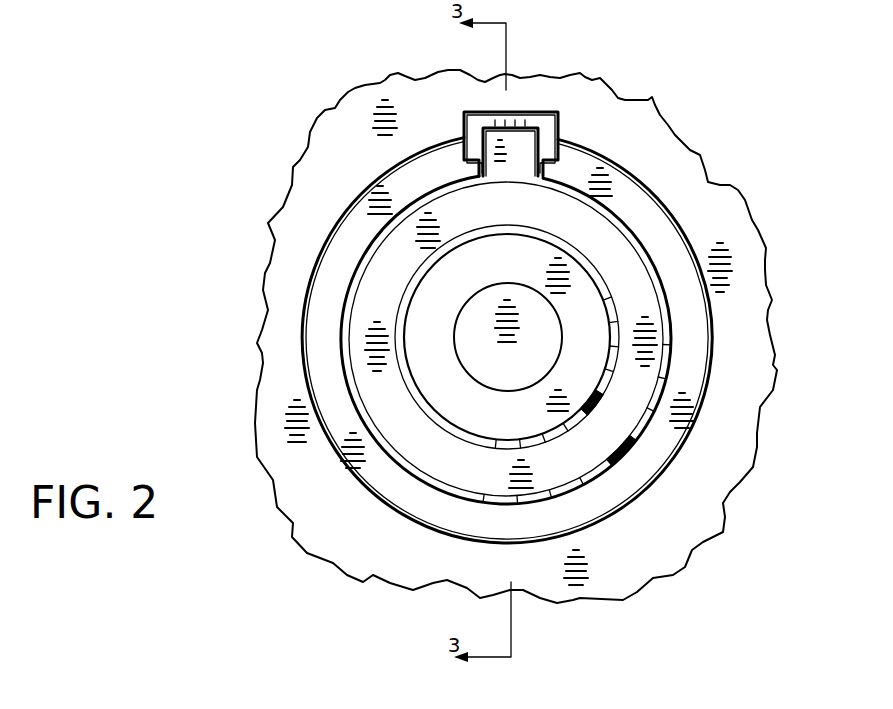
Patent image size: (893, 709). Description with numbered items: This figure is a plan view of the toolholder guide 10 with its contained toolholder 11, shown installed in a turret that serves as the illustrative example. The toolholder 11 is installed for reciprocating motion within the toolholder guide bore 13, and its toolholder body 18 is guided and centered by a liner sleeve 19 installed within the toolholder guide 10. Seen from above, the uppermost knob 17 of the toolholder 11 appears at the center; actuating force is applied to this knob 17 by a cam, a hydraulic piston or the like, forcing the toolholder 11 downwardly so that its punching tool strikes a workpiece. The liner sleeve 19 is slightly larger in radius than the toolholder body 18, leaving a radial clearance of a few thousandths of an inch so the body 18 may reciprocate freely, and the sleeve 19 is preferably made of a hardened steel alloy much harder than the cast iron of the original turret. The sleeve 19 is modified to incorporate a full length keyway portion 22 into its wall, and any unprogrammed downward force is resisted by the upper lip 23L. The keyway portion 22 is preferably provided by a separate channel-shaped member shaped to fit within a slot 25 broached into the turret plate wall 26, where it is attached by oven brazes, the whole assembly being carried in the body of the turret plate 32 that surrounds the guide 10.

The toolholder guide 10 is at (712, 318).
The toolholder 11 is at (675, 238).
The toolholder guide bore 13 is at (705, 365).
The knob 17 is at (474, 322).
The toolholder body 18 is at (606, 404).
The liner sleeve 19 is at (316, 342).
The keyway portion 22 is at (528, 120).
The upper lip 23L is at (350, 215).
The slot 25 is at (476, 84).
The turret plate wall 26 is at (622, 115).
The turret plate 32 is at (688, 180).